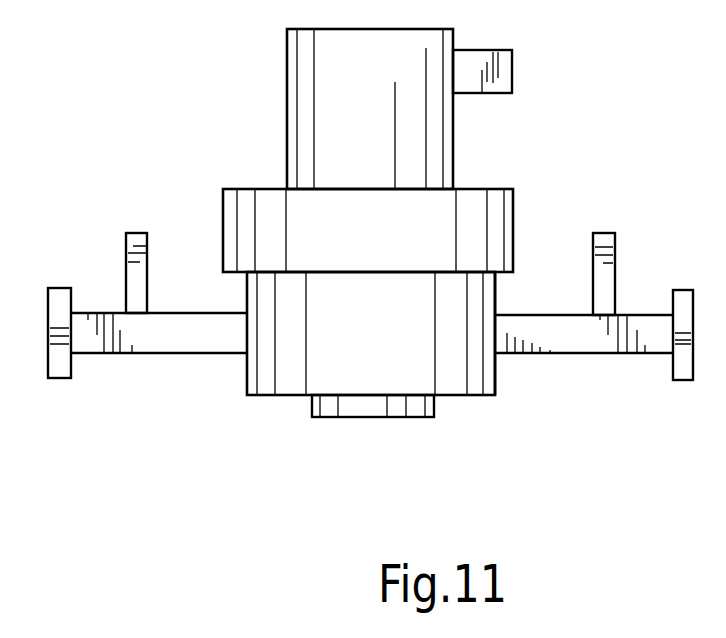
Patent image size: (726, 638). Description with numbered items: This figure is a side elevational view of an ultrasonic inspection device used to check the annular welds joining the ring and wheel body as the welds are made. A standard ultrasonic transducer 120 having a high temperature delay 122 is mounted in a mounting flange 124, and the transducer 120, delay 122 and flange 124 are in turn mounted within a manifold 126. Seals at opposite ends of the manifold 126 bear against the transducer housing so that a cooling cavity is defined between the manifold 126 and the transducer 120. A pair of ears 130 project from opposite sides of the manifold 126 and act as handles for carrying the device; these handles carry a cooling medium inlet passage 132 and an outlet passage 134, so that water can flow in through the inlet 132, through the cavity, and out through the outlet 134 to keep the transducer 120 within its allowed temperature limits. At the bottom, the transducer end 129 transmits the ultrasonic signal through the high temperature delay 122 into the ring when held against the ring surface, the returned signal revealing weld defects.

The ultrasonic transducer 120 is at (287, 73).
The high temperature delay 122 is at (312, 408).
The mounting flange 124 is at (223, 218).
The manifold 126 is at (495, 372).
The end of the transducer 129 is at (363, 418).
The ears 130 is at (135, 353).
The cooling medium inlet passage 132 is at (608, 238).
The cooling medium outlet passage 134 is at (126, 253).